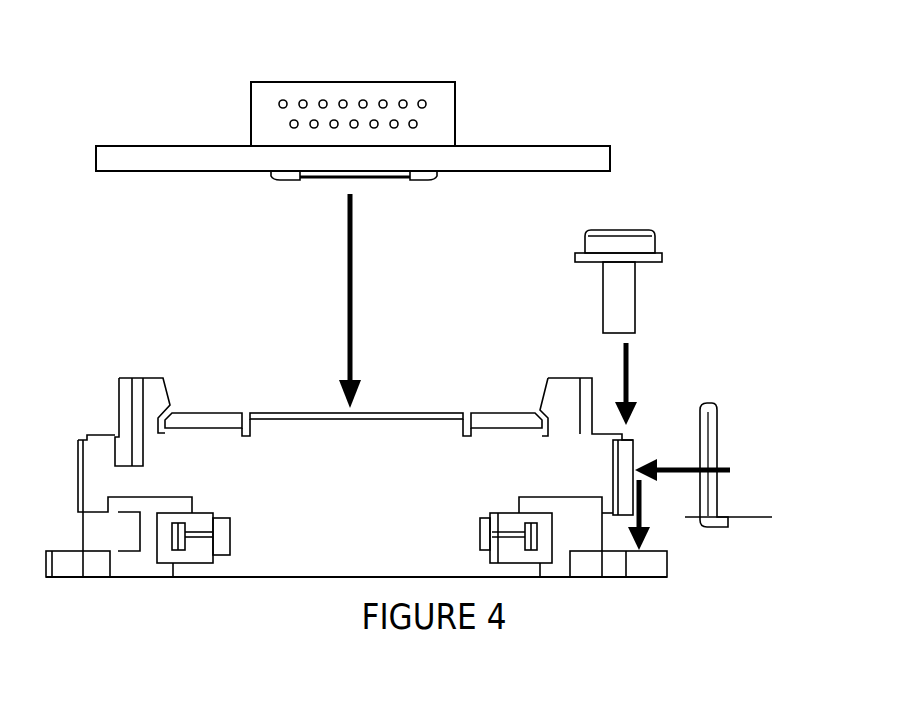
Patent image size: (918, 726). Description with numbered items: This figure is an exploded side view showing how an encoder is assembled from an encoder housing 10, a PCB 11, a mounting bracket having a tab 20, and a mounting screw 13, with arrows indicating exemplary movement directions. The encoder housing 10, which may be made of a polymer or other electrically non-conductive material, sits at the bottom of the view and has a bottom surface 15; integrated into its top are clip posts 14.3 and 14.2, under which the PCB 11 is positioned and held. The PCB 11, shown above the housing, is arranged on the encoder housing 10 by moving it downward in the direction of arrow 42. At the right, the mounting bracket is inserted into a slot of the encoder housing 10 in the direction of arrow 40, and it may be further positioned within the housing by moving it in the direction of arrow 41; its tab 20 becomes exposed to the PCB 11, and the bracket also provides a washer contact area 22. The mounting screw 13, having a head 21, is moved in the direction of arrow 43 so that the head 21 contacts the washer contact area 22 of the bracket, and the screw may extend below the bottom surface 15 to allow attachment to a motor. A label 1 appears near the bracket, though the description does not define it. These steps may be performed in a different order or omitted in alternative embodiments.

The contact strip 1 is at (712, 447).
The encoder housing 10 is at (168, 479).
The PCB 11 is at (561, 138).
The mounting screw 13 is at (625, 302).
The clip post 14.2 is at (562, 398).
The clip post 14.3 is at (142, 393).
The bottom surface 15 is at (270, 578).
The tab 20 is at (722, 408).
The head 21 is at (656, 243).
The washer contact area 22 is at (772, 518).
The arrow 40 is at (668, 474).
The arrow 41 is at (620, 514).
The arrow 42 is at (348, 302).
The arrow 43 is at (628, 385).